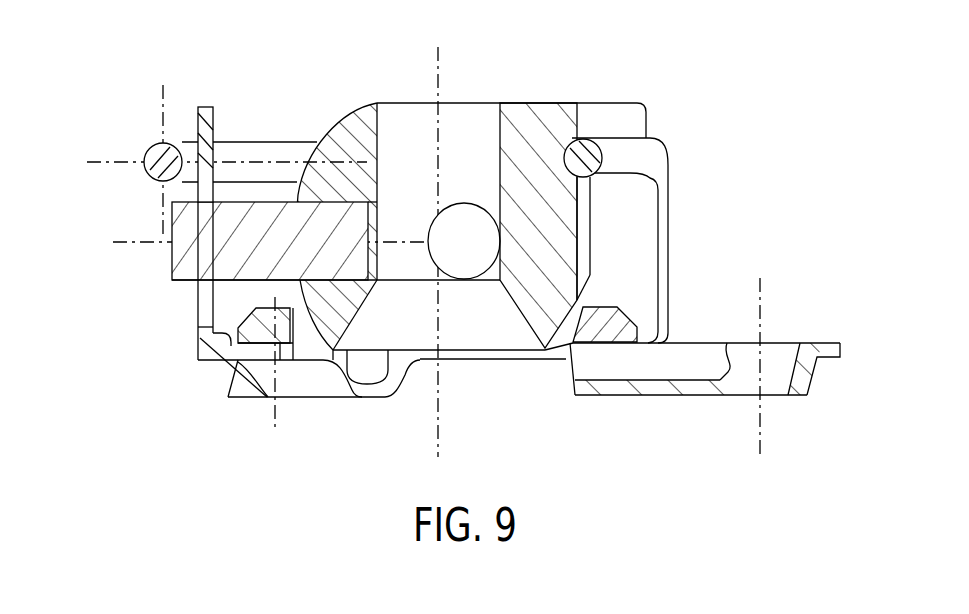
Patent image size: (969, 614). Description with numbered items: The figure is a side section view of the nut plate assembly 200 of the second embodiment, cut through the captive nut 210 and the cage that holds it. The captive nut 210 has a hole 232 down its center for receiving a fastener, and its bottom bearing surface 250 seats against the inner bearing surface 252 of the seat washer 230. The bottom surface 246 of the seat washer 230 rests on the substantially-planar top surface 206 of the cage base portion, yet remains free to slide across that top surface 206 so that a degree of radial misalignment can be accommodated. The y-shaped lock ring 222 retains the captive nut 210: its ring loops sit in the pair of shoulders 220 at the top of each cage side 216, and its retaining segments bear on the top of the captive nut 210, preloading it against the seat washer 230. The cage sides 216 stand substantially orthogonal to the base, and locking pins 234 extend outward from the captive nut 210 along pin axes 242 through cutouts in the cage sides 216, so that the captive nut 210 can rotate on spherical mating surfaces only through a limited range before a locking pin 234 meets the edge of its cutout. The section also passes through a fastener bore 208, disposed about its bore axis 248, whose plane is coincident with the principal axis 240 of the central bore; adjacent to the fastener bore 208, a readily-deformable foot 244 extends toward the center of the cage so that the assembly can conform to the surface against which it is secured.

The nut plate assembly 200 is at (121, 58).
The top surface 206 is at (213, 335).
The fastener bore 208 is at (247, 398).
The captive nut 210 is at (322, 140).
The cage side 216 is at (205, 106).
The shoulder 220 is at (612, 137).
The lock ring 222 is at (146, 156).
The seat washer 230 is at (612, 306).
The hole 232 is at (497, 113).
The locking pin 234 is at (172, 223).
The principal axis 240 is at (437, 60).
The pin axis 242 is at (135, 243).
The foot 244 is at (392, 396).
The bottom surface 246 is at (238, 343).
The bore axis 248 is at (277, 417).
The bottom bearing surface 250 is at (555, 325).
The inner bearing surface 252 is at (568, 345).